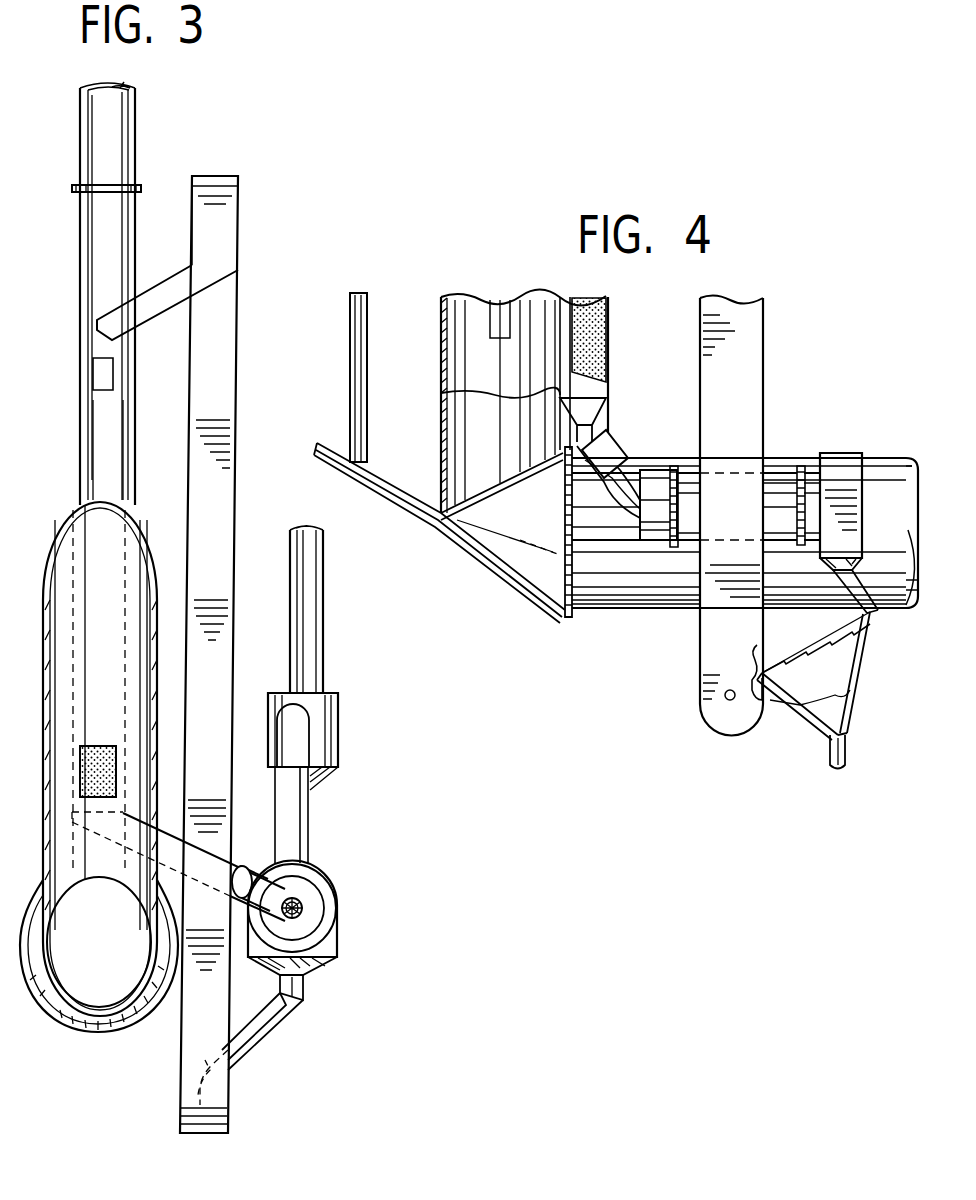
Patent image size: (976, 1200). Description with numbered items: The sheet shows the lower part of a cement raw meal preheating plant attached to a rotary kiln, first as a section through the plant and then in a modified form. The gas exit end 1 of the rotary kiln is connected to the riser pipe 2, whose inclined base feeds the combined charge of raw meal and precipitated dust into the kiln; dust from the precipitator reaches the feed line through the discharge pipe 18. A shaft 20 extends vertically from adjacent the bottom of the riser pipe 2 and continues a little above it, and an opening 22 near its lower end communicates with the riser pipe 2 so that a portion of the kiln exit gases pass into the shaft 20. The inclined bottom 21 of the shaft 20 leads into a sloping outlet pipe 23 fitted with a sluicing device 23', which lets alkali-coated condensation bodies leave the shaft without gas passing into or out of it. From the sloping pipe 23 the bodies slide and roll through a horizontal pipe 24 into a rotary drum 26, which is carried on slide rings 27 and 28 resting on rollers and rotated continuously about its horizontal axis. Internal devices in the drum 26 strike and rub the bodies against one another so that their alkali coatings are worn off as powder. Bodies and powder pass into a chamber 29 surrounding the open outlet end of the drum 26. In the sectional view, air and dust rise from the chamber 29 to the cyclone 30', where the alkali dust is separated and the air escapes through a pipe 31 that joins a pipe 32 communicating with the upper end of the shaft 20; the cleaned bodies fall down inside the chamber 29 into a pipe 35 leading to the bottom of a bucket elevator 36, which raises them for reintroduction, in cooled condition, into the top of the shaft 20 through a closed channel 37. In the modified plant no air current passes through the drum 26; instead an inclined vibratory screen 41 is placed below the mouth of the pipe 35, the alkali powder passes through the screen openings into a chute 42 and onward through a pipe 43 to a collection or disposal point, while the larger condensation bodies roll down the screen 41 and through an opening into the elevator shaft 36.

In FIG. 3, the gas exit end of rotary kiln 1 is at (108, 1030).
In FIG. 4, the gas exit end of rotary kiln 1 is at (887, 465).
In FIG. 3, the riser pipe 2 is at (43, 724).
In FIG. 4, the riser pipe 2 is at (441, 385).
In FIG. 4, the discharge pipe 18 is at (350, 362).
In FIG. 3, the shaft 20 is at (85, 458).
In FIG. 4, the shaft 20 is at (609, 298).
In FIG. 4, the bottom of the shaft 21 is at (596, 405).
In FIG. 3, the opening 22 is at (105, 748).
In FIG. 4, the opening 22 is at (606, 338).
In FIG. 3, the sloping outlet pipe 23 is at (178, 859).
In FIG. 4, the sloping outlet pipe 23 is at (616, 456).
In FIG. 3, the sluicing device 23' is at (255, 874).
In FIG. 4, the sluicing device 23' is at (626, 447).
In FIG. 3, the horizontal pipe 24 is at (305, 900).
In FIG. 3, the rotary drum 26 is at (325, 918).
In FIG. 4, the rotary drum 26 is at (780, 480).
In FIG. 3, the slide ring 27 is at (322, 870).
In FIG. 4, the slide ring 27 is at (674, 547).
In FIG. 4, the slide ring 28 is at (800, 547).
In FIG. 3, the chamber 29 is at (325, 945).
In FIG. 4, the chamber 29 is at (845, 455).
In FIG. 3, the cyclone 30' is at (333, 773).
In FIG. 3, the pipe 31 is at (305, 628).
In FIG. 3, the pipe 32 is at (100, 130).
In FIG. 3, the pipe 35 is at (262, 1030).
In FIG. 4, the pipe 35 is at (850, 590).
In FIG. 3, the bucket elevator 36 is at (220, 515).
In FIG. 4, the bucket elevator 36 is at (752, 368).
In FIG. 3, the closed channel 37 is at (140, 300).
In FIG. 4, the inclined vibratory screen 41 is at (840, 640).
In FIG. 4, the chute 42 is at (855, 672).
In FIG. 4, the pipe 43 is at (845, 754).